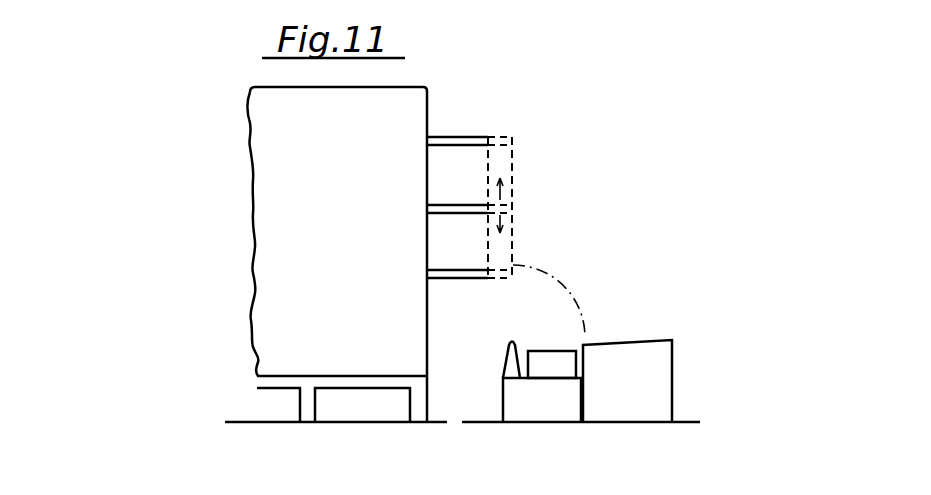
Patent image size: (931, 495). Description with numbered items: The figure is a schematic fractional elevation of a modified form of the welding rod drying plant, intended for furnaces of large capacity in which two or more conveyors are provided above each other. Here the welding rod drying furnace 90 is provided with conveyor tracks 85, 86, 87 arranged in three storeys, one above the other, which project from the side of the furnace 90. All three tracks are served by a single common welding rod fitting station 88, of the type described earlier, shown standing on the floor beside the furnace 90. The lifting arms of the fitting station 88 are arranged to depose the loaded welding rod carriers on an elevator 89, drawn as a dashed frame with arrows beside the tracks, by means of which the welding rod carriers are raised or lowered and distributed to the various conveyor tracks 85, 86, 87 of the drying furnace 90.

The conveyor track 85 is at (457, 135).
The conveyor track 86 is at (455, 199).
The conveyor track 87 is at (450, 268).
The welding rod fitting station 88 is at (541, 408).
The elevator 89 is at (510, 207).
The housing 90 is at (407, 309).